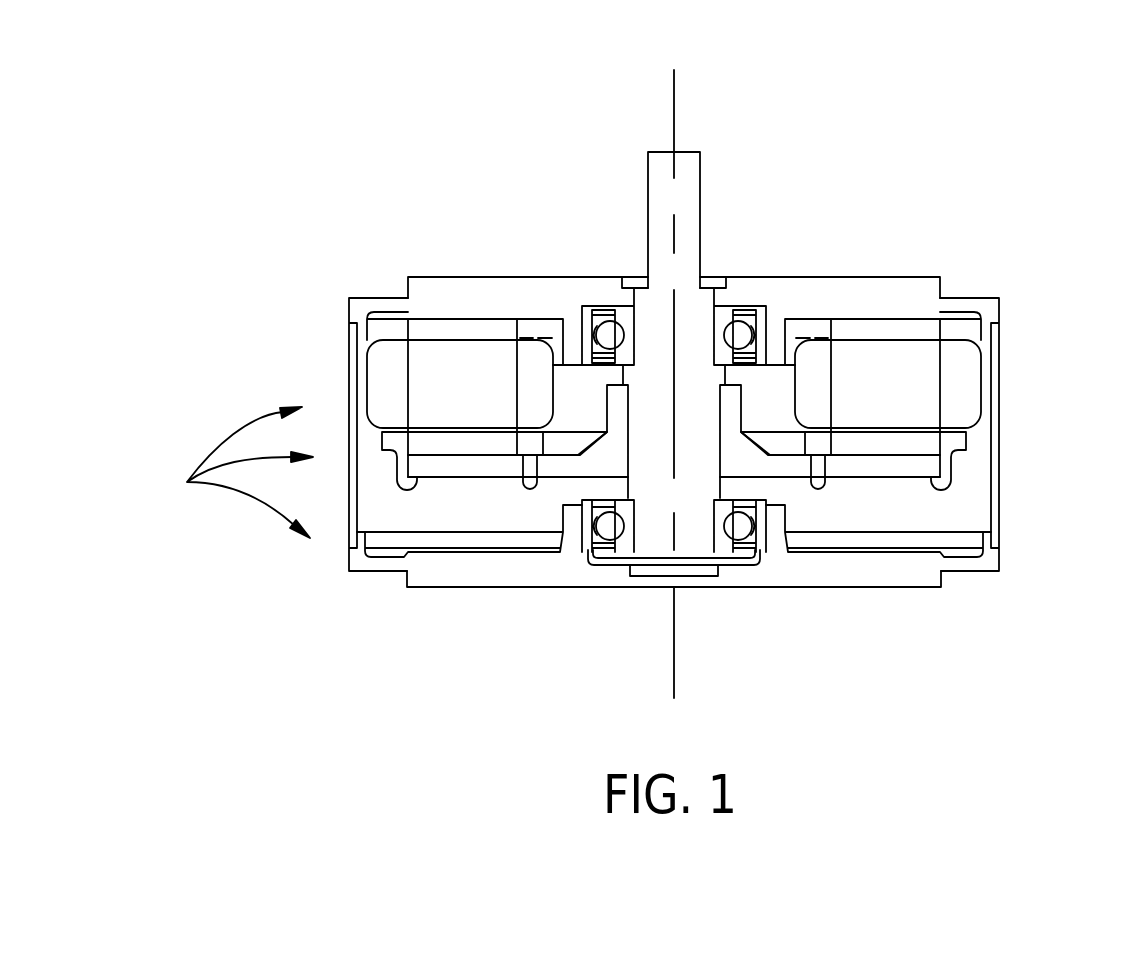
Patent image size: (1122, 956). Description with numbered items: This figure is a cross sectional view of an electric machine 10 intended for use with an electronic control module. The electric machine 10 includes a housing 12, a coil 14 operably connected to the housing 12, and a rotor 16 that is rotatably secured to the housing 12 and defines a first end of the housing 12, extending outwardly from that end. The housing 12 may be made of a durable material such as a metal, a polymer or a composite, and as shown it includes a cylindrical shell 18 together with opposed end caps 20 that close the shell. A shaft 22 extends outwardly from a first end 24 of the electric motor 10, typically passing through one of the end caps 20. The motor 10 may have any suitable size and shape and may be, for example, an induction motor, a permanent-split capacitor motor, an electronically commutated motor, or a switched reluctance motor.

The electric machine 10 is at (620, 375).
The housing 12 is at (232, 472).
The coil 14 is at (371, 353).
The rotor 16 is at (865, 478).
The cylindrical shell 18 is at (999, 538).
The end caps 20 is at (818, 276).
The shaft 22 is at (700, 197).
The first end 24 is at (443, 277).